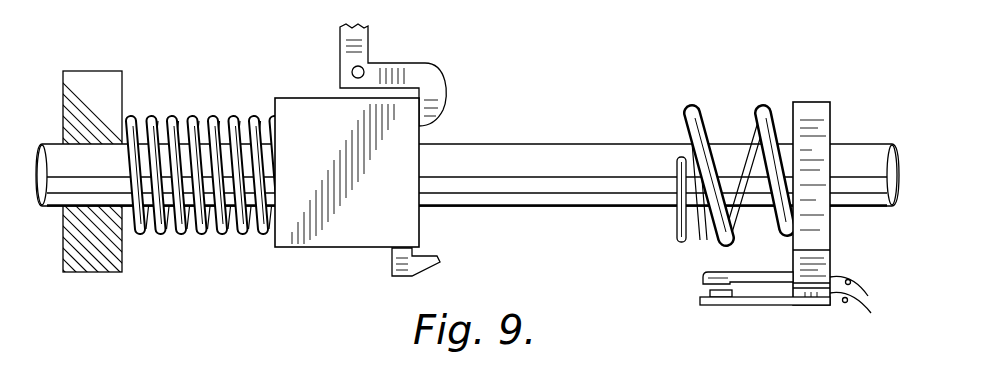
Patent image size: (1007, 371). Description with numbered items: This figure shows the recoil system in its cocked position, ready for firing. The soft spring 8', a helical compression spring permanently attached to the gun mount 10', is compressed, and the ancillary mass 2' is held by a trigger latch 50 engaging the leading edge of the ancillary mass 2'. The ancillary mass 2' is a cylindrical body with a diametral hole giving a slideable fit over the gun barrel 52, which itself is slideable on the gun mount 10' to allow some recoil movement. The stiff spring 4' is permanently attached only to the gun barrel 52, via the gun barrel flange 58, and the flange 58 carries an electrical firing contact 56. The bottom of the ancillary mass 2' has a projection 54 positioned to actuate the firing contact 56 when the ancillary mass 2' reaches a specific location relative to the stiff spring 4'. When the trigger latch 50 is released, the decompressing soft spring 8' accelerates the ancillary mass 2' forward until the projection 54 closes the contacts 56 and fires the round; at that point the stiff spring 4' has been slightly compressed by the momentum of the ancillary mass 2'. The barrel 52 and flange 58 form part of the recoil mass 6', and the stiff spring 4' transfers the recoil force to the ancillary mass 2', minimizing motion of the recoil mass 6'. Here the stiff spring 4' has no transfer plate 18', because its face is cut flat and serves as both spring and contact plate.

The ancillary mass 2' is at (347, 198).
The stiff spring 4' is at (752, 151).
The recoil mass 6' is at (467, 144).
The soft spring 8' is at (210, 175).
The gun mount 10' is at (115, 198).
The transfer plate 18' is at (654, 214).
The trigger latch 50 is at (423, 64).
The gun barrel 52 is at (467, 165).
The projection 54 is at (398, 278).
The electrical firing contact 56 is at (713, 304).
The gun barrel flange 58 is at (817, 108).